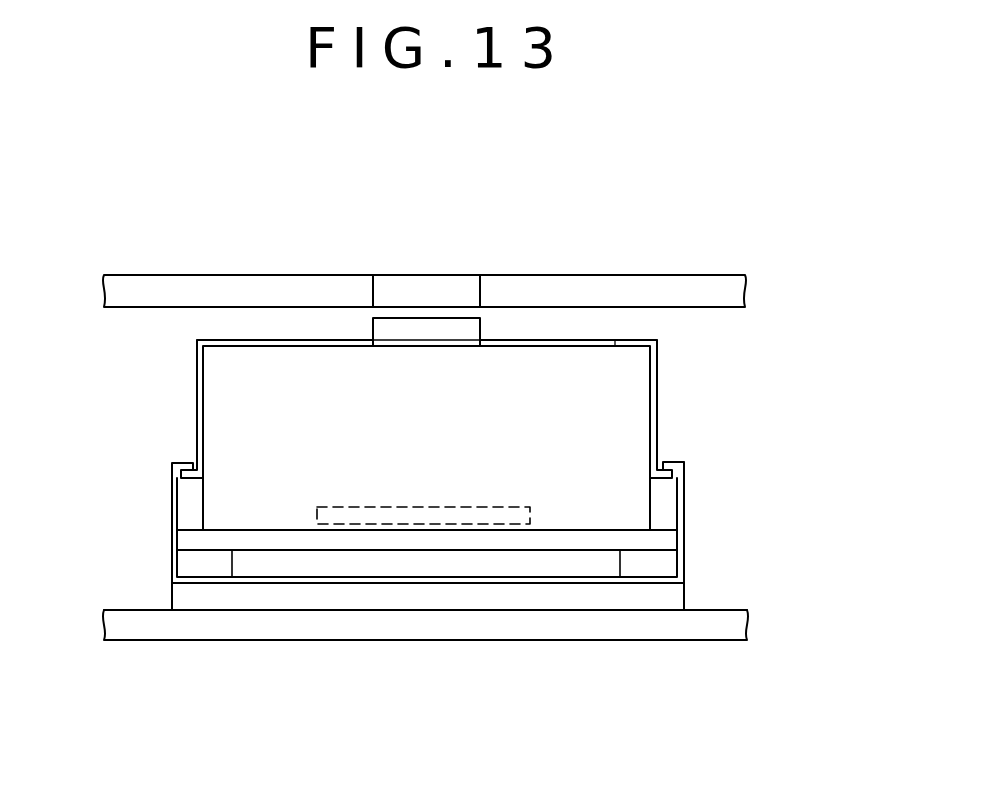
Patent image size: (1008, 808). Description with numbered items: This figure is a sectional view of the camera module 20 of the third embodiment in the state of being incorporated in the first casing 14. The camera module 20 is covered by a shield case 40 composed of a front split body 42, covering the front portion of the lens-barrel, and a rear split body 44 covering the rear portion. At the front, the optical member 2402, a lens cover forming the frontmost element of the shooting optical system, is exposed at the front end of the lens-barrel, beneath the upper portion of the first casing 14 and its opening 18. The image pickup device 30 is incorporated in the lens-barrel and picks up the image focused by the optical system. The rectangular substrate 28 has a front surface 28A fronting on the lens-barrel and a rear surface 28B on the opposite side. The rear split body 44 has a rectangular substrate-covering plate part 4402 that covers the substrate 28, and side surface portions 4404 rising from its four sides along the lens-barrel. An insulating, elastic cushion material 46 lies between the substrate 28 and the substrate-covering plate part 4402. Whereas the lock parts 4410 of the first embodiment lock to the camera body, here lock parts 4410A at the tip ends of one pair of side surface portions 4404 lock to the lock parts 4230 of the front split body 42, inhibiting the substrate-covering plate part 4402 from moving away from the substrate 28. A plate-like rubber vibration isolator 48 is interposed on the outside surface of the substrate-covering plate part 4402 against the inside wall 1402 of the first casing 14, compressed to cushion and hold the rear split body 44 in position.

The first casing 14 is at (655, 273).
The opening 18 is at (403, 274).
The camera module 20 is at (797, 416).
The substrate 28 is at (586, 526).
The front surface 28A is at (257, 528).
The rear surface 28B is at (262, 553).
The image pickup device 30 is at (465, 526).
The shield case 40 is at (163, 357).
The front split body 42 is at (269, 335).
The rear split body 44 is at (312, 586).
The cushion material 46 is at (533, 553).
The rubber vibration isolator 48 is at (627, 597).
The inside wall 1402 is at (717, 609).
The optical member 2402 is at (450, 318).
The lock parts 4230 is at (193, 477).
The substrate-covering plate part 4402 is at (360, 553).
The side surface portions 4404 is at (172, 558).
The lock parts 4410 is at (180, 463).
The lock parts 4410A is at (676, 458).